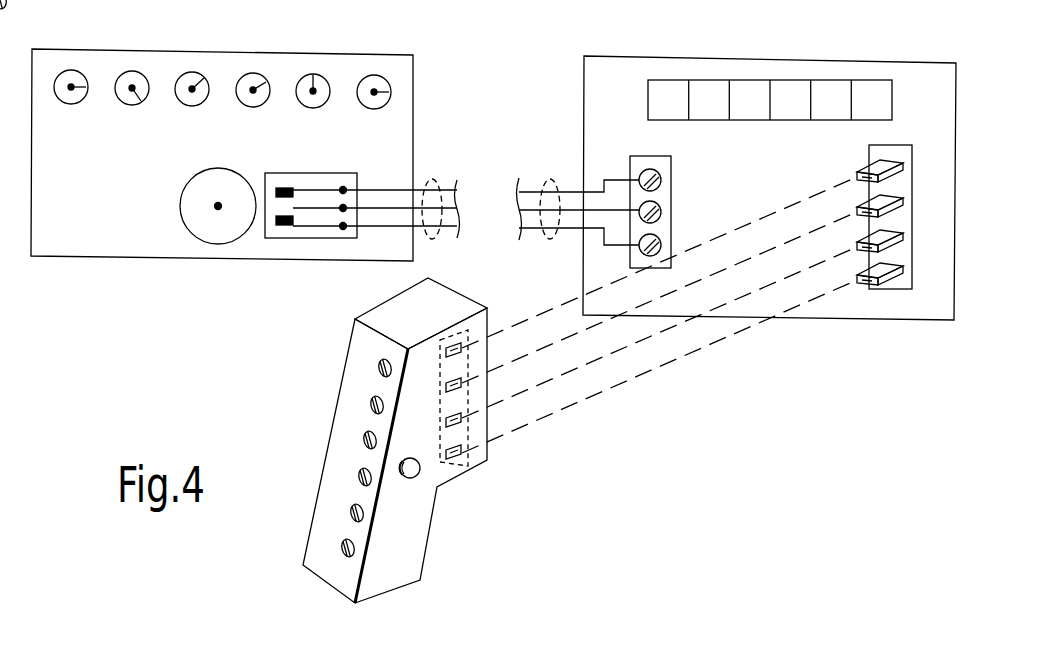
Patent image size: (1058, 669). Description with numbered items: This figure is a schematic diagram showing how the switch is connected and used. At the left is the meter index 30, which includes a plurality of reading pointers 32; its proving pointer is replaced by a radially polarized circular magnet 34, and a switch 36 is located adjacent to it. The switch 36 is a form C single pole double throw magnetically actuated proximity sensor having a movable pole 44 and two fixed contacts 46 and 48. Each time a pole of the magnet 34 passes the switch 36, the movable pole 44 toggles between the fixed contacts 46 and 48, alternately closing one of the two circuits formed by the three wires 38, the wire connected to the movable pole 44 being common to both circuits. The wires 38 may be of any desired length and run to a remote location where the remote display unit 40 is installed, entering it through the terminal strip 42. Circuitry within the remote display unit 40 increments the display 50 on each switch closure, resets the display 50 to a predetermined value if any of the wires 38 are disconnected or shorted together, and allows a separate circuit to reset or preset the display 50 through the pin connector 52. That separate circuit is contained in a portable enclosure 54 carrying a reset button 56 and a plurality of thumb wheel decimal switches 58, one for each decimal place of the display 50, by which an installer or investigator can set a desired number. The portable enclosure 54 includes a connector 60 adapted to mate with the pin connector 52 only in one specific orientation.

The meter index 30 is at (151, 50).
The reading pointers 32 is at (83, 100).
The radially polarized circular magnet 34 is at (181, 203).
The switch 36 is at (320, 173).
The wires 38 is at (440, 178).
The remote display unit 40 is at (742, 56).
The terminal strip 42 is at (652, 156).
The movable pole 44 is at (318, 208).
The fixed contact 46 is at (287, 188).
The fixed contact 48 is at (282, 225).
The display 50 is at (893, 104).
The pin connector 52 is at (889, 283).
The portable enclosure 54 is at (427, 540).
The reset button 56 is at (412, 479).
The thumb wheel decimal switches 58 is at (378, 372).
The connector 60 is at (468, 456).